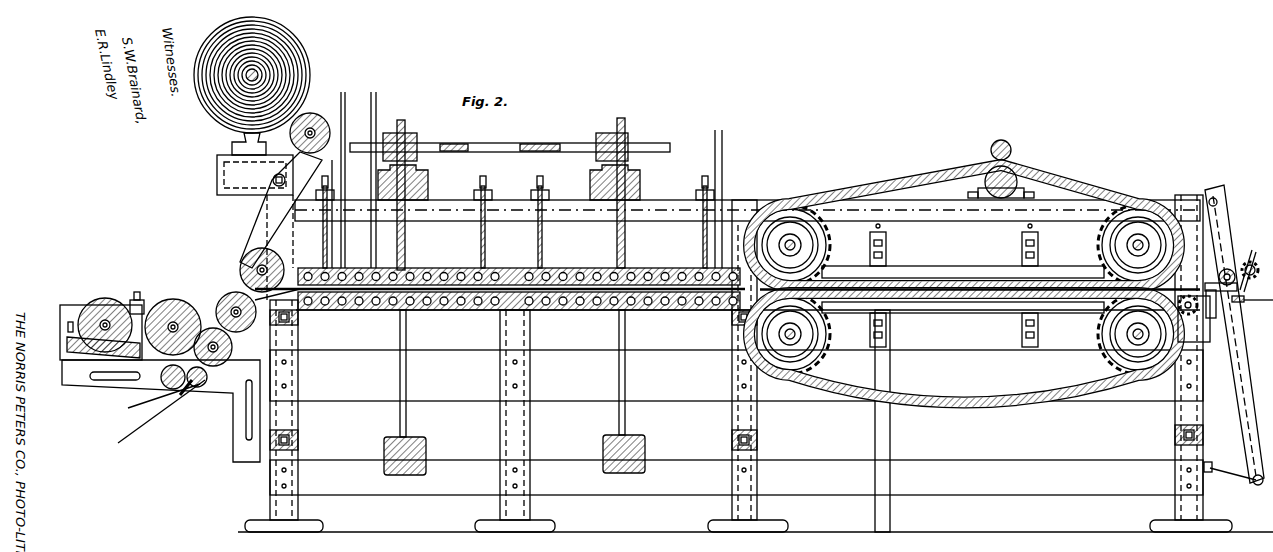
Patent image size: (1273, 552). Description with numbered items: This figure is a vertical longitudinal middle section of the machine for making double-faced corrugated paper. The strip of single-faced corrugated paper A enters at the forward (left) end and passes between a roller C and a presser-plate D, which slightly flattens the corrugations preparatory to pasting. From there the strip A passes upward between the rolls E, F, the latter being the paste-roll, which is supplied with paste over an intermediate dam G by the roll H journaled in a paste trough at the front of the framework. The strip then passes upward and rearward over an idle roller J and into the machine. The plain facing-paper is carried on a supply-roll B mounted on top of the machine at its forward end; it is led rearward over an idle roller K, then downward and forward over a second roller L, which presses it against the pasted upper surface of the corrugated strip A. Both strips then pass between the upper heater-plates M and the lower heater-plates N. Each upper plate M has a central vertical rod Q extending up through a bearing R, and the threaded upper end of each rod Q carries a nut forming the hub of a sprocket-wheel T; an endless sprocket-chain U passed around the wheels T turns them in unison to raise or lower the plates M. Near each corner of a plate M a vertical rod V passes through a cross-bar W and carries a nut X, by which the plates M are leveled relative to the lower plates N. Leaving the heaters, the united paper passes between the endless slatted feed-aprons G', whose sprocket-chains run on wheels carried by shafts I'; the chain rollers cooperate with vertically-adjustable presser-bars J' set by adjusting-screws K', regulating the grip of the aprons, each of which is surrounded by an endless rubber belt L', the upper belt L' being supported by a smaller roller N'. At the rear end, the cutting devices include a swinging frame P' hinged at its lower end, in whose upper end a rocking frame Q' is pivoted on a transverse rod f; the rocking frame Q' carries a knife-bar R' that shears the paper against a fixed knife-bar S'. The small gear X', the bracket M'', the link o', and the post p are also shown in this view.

The strip of single-faced corrugated paper A is at (161, 411).
The supply-roll B is at (217, 103).
The roller C is at (155, 398).
The presser-plate D is at (188, 390).
The roll E is at (222, 362).
The paste-roll F is at (175, 300).
The dam G is at (137, 296).
The roll H is at (103, 300).
The idle roller J is at (229, 305).
The idle roller K is at (310, 120).
The roller L is at (253, 270).
The upper heater-plate M is at (519, 277).
The lower heater-plate N is at (528, 392).
The vertical rod Q is at (511, 190).
The bearing R is at (517, 179).
The sprocket-wheel T is at (432, 145).
The endless sprocket-chain U is at (500, 136).
The vertical rod V is at (327, 246).
The cross-bar W is at (324, 176).
The nut X is at (515, 184).
The shaft I' is at (964, 289).
The endless apron G' is at (974, 283).
The presser-bar J' is at (963, 286).
The adjusting-screw K' is at (965, 285).
The endless rubber belt L' is at (1023, 283).
The roller N' is at (1001, 163).
The swinging frame P' is at (1234, 335).
The rocking frame Q' is at (1249, 262).
The knife-bar R' is at (1257, 261).
The transverse rod f is at (1226, 268).
The fixed knife-bar S' is at (1252, 309).
The gear wheel X' is at (1194, 319).
The bracket M'' is at (1220, 311).
The link o' is at (1230, 467).
The post p is at (882, 421).